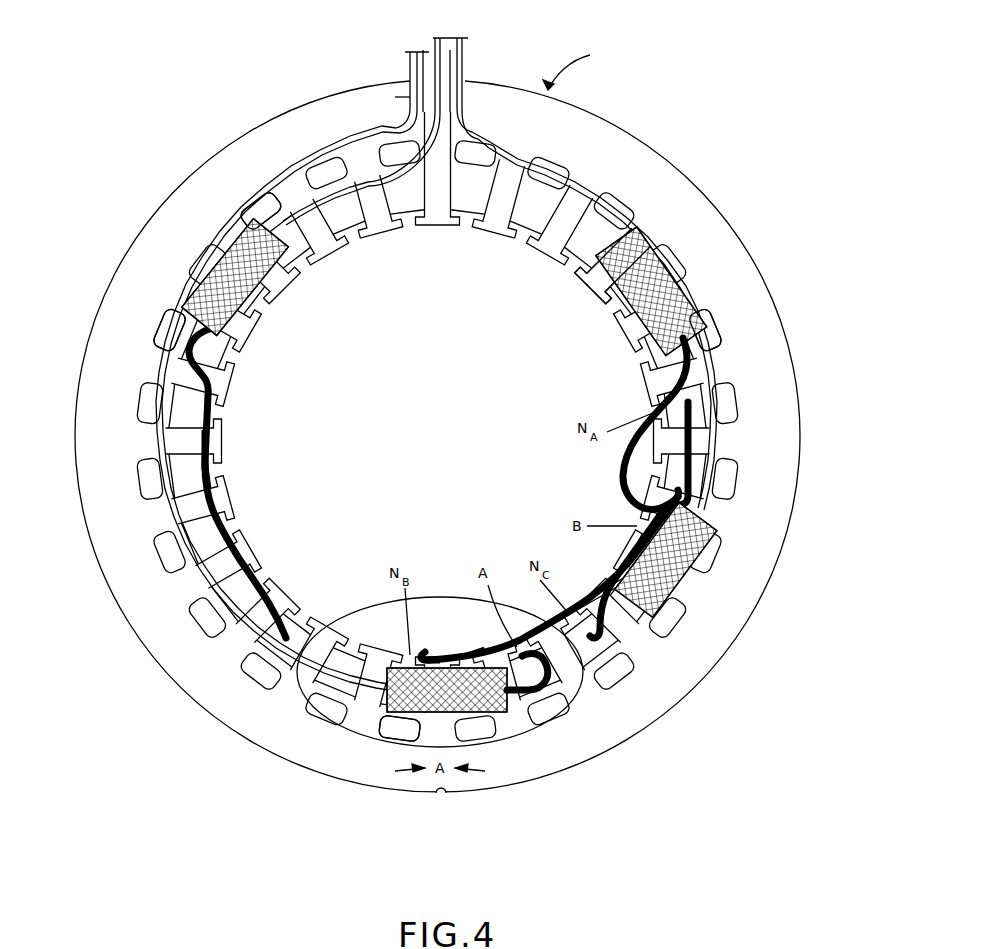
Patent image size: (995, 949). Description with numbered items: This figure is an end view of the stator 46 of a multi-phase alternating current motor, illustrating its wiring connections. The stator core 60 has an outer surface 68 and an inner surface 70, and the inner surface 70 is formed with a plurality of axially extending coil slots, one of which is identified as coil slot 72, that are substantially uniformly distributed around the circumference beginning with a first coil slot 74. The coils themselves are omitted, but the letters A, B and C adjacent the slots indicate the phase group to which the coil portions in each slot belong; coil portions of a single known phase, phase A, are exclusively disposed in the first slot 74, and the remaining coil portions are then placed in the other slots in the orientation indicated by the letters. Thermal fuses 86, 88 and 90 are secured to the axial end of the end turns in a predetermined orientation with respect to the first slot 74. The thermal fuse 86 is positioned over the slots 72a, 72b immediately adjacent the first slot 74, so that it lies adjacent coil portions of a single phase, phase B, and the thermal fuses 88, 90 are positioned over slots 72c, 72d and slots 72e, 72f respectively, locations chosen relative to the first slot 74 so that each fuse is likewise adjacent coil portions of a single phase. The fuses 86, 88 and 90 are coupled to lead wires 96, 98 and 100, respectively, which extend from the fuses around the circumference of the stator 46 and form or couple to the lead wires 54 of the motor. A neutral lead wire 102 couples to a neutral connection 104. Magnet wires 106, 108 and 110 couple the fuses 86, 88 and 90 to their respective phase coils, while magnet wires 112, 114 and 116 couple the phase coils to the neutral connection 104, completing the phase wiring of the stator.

The stator 46 is at (578, 63).
The lead wires 54 is at (450, 62).
The stator core 60 is at (653, 163).
The outer surface 68 is at (395, 97).
The inner surface 70 is at (380, 237).
The coil slot 72 is at (215, 624).
The slot adjacent first slot 72a is at (493, 730).
The slot adjacent first slot 72b is at (388, 727).
The slot 72c is at (203, 273).
The slot 72d is at (247, 217).
The slot 72e is at (660, 240).
The slot 72f is at (710, 335).
The first coil slot 74 is at (540, 700).
The thermal fuse 86 is at (430, 660).
The thermal fuse 88 is at (240, 334).
The thermal fuse 90 is at (700, 323).
The lead wire 96 is at (173, 540).
The lead wire 98 is at (290, 170).
The lead wire 100 is at (598, 255).
The neutral lead wire 102 is at (560, 168).
The neutral connection 104 is at (683, 577).
The magnet wire 106 is at (512, 692).
The magnet wire 108 is at (218, 452).
The magnet wire 110 is at (622, 460).
The magnet wire 112 is at (478, 652).
The magnet wire 114 is at (607, 607).
The magnet wire 116 is at (710, 440).